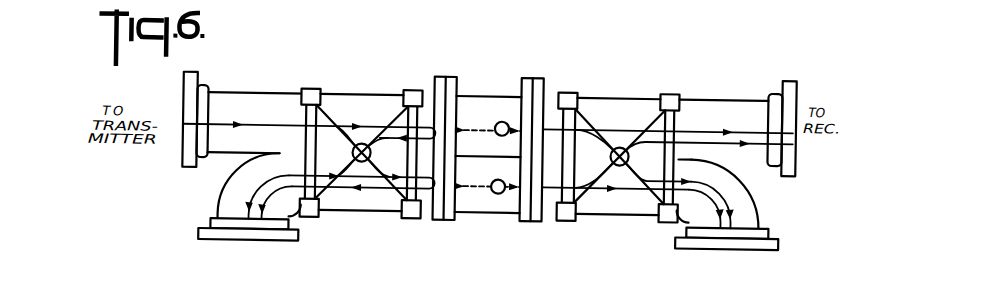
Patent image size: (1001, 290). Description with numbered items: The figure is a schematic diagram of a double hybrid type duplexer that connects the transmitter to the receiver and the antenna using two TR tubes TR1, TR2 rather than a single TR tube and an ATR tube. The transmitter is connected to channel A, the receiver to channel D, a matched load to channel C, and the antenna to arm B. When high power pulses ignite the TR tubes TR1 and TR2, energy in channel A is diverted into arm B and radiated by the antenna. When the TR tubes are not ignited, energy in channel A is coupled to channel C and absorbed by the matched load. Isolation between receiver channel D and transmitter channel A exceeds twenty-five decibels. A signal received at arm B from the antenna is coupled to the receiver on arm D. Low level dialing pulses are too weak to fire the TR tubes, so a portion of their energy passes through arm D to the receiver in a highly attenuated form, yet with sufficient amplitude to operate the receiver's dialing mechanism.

The channel A is at (258, 91).
The arm B is at (222, 190).
The channel C is at (758, 208).
The channel D is at (717, 92).
The TR tube TR1 is at (502, 117).
The TR tube TR2 is at (499, 189).